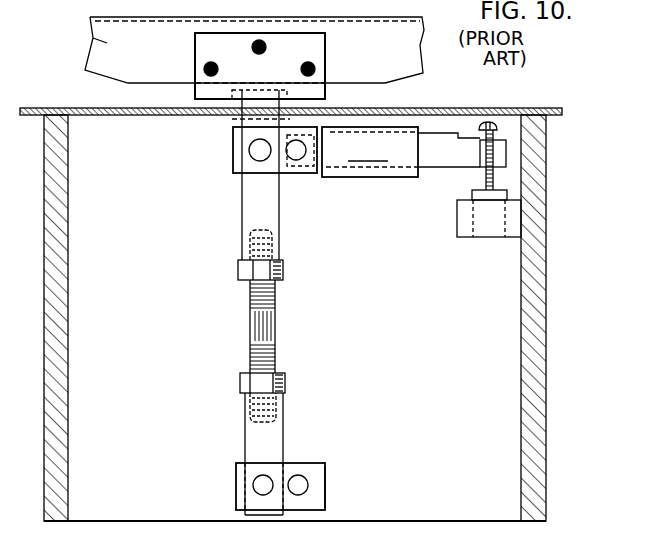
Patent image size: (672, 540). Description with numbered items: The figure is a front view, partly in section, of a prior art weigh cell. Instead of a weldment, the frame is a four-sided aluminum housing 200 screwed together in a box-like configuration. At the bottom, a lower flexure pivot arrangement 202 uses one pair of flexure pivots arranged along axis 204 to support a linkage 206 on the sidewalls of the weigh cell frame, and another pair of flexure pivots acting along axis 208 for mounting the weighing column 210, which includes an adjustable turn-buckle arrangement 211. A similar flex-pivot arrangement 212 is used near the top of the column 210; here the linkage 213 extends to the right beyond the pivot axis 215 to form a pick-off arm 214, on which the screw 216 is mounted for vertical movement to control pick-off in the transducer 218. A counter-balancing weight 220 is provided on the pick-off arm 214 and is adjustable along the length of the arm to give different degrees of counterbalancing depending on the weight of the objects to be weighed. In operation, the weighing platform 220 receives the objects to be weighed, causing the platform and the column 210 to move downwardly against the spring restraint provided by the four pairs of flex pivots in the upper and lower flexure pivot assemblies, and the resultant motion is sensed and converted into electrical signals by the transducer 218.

The four-sided aluminum housing 200 is at (44, 296).
The lower flexure pivot arrangement 202 is at (287, 462).
The axis 204 is at (298, 485).
The linkage 206 is at (325, 503).
The axis 208 is at (263, 485).
The weighing column 210 is at (228, 262).
The adjustable turn-buckle arrangement 211 is at (276, 333).
The flex-pivot arrangement 212 is at (233, 150).
The linkage 213 is at (282, 174).
The pick-off arm 214 is at (442, 140).
The pivot axis 215 is at (298, 151).
The screw 216 is at (488, 172).
The transducer 218 is at (472, 198).
The weighing platform 220 is at (107, 43).